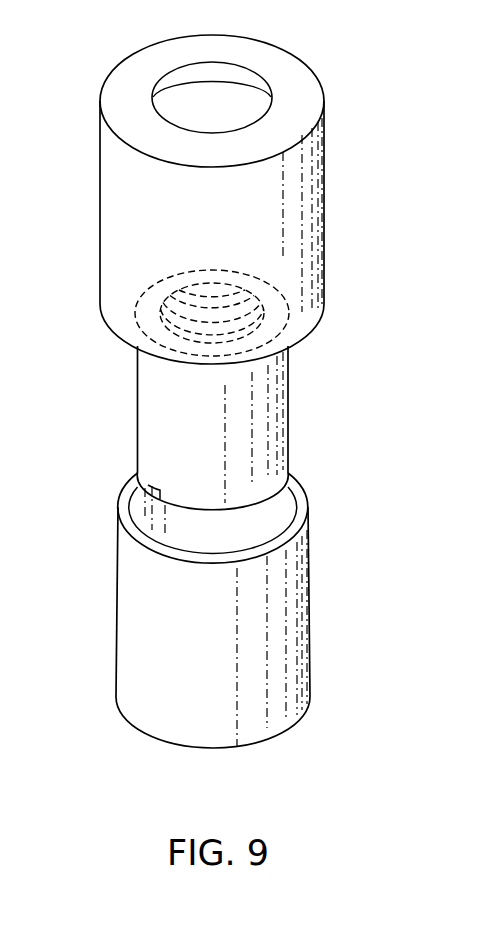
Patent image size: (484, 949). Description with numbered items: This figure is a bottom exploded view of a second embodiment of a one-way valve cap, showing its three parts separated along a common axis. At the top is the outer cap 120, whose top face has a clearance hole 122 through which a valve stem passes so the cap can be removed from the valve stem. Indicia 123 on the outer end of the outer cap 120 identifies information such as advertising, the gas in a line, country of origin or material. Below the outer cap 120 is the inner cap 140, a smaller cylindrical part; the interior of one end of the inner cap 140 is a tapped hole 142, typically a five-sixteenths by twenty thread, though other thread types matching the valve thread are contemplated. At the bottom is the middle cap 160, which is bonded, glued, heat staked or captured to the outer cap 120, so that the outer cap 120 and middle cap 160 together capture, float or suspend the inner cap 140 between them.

The outer cap 120 is at (318, 321).
The clearance hole 122 is at (250, 72).
The indicia 123 is at (113, 108).
The inner cap 140 is at (285, 410).
The tapped hole 142 is at (158, 323).
The middle cap 160 is at (307, 645).